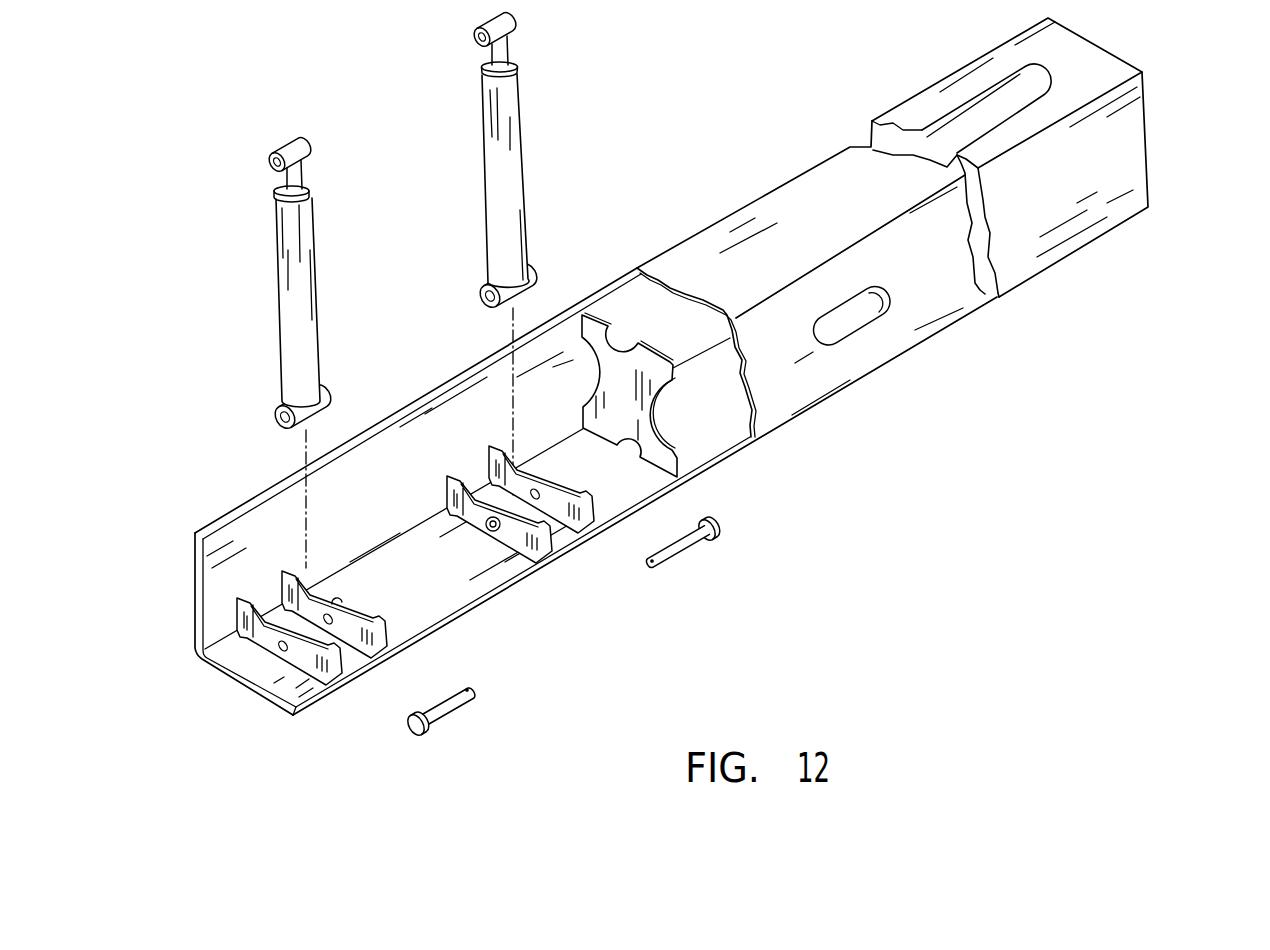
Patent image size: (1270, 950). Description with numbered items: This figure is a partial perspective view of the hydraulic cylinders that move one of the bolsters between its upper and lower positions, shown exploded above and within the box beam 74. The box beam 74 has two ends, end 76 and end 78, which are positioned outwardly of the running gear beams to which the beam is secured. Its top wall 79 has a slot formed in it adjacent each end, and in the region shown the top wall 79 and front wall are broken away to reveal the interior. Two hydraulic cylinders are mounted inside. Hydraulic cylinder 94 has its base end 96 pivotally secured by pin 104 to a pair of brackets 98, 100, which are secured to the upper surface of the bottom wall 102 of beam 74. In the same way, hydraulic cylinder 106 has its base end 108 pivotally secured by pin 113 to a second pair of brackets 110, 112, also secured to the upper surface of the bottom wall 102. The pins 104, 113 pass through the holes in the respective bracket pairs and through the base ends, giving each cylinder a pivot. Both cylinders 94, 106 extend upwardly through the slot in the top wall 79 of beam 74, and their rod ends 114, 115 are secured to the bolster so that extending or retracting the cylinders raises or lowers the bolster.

The box beam 74 is at (760, 180).
The end of box beam 76 is at (232, 702).
The end of box beam 78 is at (1157, 107).
The top wall of beam 79 is at (818, 254).
The hydraulic cylinder 94 is at (317, 307).
The base end of hydraulic cylinder 96 is at (328, 402).
The bracket 98 is at (295, 663).
The bracket 100 is at (388, 657).
The bottom wall of beam 102 is at (430, 589).
The pin 104 is at (460, 710).
The hydraulic cylinder 106 is at (510, 160).
The base end of hydraulic cylinder 108 is at (535, 280).
The bracket 110 is at (540, 560).
The bracket 112 is at (570, 520).
The pin 113 is at (683, 557).
The rod end of hydraulic cylinder 114 is at (308, 147).
The rod end of hydraulic cylinder 115 is at (505, 22).